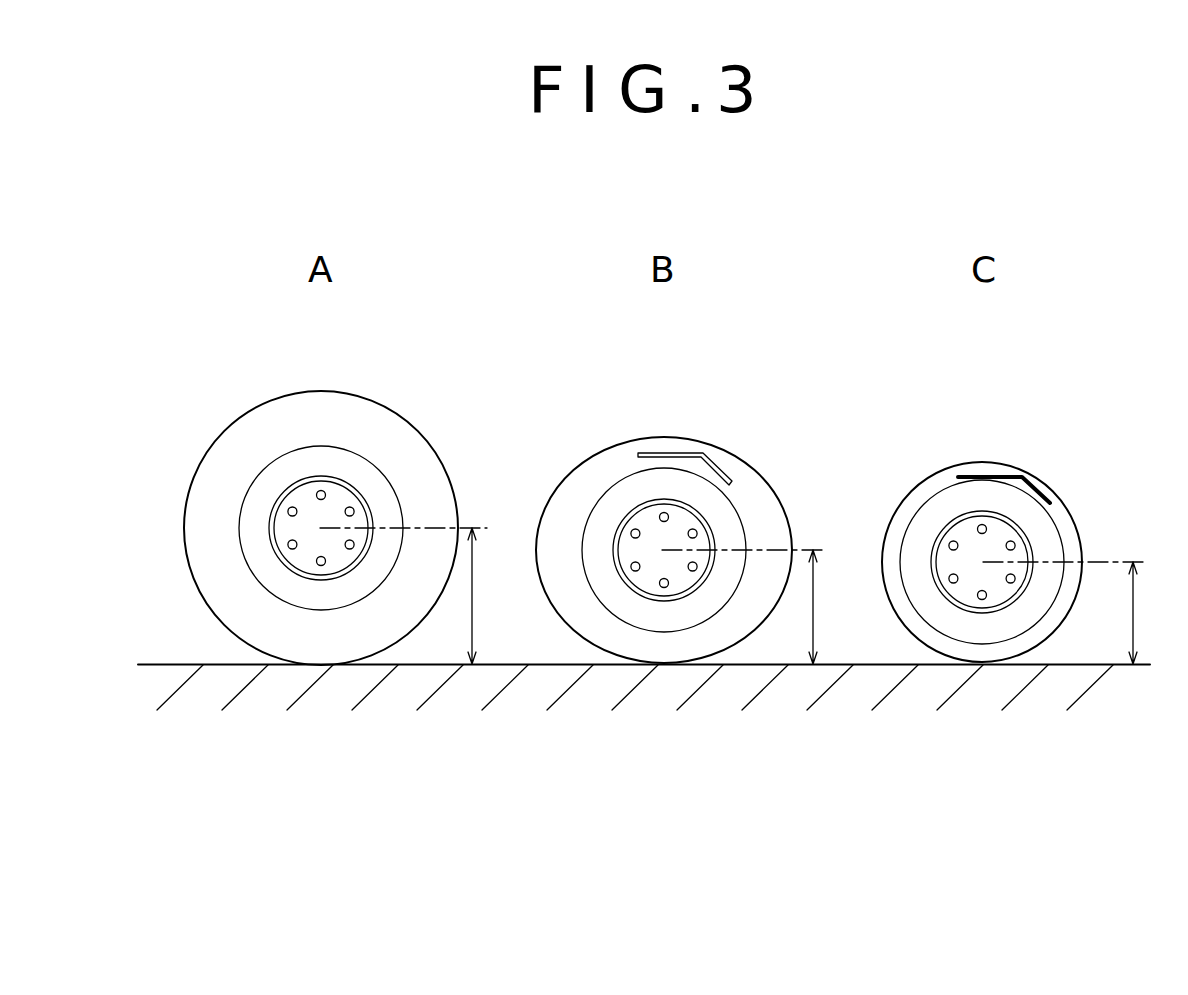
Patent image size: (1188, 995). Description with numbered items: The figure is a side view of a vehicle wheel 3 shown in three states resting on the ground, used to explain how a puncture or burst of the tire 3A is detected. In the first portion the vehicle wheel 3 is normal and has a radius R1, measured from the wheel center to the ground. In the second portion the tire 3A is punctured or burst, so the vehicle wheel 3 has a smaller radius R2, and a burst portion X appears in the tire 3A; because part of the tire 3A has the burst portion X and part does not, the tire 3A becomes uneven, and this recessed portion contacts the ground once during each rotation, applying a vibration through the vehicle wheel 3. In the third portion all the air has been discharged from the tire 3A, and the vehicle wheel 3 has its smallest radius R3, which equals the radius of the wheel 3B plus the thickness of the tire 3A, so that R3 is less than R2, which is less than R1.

The vehicle wheel 3 is at (664, 489).
The tire 3A is at (315, 400).
The wheel 3B is at (317, 602).
The burst portion X is at (710, 458).
The radius of the vehicle wheel (normal) R1 is at (494, 596).
The radius of the vehicle wheel (punctured or burst) R2 is at (837, 607).
The radius of the vehicle wheel (fully deflated) R3 is at (1157, 613).